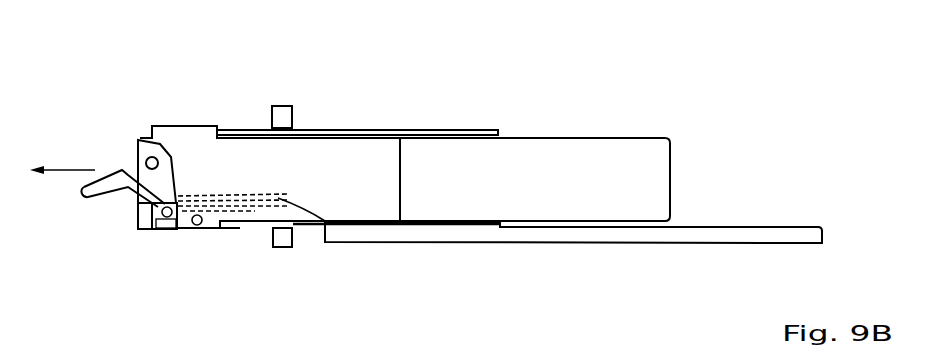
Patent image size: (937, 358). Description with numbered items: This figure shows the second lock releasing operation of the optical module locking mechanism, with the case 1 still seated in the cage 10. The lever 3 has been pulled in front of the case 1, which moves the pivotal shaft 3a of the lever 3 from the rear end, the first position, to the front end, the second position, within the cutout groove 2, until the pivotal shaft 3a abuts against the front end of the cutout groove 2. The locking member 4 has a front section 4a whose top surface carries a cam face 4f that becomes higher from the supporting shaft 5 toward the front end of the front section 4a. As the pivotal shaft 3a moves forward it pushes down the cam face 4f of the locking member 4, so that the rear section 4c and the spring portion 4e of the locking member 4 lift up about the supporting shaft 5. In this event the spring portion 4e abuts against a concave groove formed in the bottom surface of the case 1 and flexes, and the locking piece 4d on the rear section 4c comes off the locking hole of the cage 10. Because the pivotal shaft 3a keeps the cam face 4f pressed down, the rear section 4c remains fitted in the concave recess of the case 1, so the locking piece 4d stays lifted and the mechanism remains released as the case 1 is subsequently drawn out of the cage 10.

The case 1 is at (205, 137).
The cutout groove 2 is at (172, 231).
The lever 3 is at (91, 199).
The pivotal shaft 3a is at (172, 207).
The locking member 4 is at (252, 184).
The front section 4a is at (136, 220).
The rear section 4c is at (295, 222).
The locking piece 4d is at (238, 228).
The spring portion 4e is at (278, 205).
The cam face 4f is at (165, 204).
The supporting shaft 5 is at (198, 228).
The cage 10 is at (474, 131).